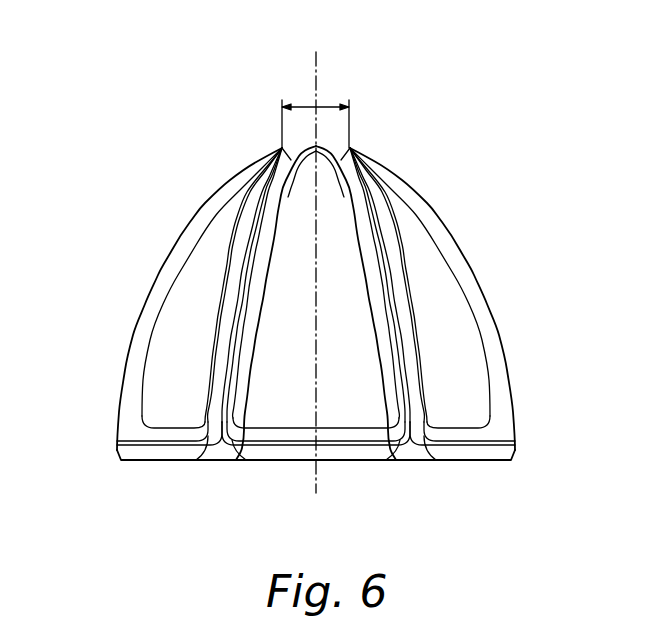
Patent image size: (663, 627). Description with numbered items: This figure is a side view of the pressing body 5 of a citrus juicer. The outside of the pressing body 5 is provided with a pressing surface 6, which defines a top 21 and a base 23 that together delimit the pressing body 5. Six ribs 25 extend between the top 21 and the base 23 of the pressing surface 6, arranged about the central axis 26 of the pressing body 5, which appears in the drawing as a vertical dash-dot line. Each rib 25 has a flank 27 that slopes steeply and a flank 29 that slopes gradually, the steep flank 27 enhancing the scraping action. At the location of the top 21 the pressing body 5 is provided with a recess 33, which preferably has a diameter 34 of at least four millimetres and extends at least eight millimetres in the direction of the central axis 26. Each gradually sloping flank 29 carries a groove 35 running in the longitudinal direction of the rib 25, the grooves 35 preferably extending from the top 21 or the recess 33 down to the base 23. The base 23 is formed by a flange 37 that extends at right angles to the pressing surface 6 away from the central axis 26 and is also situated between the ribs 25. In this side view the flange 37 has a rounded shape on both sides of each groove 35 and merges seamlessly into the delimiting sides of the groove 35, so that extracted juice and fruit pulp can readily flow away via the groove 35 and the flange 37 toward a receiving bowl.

The pressing body 5 is at (305, 283).
The pressing surface 6 is at (481, 270).
The top 21 is at (297, 132).
The base 23 is at (171, 472).
The rib 25 is at (175, 390).
The central axis 26 is at (313, 62).
The steeply sloping flank 27 is at (160, 312).
The gradually sloping flank 29 is at (212, 319).
The recess 33 is at (339, 156).
The diameter 34 is at (320, 103).
The groove 35 is at (263, 198).
The flange 37 is at (342, 450).